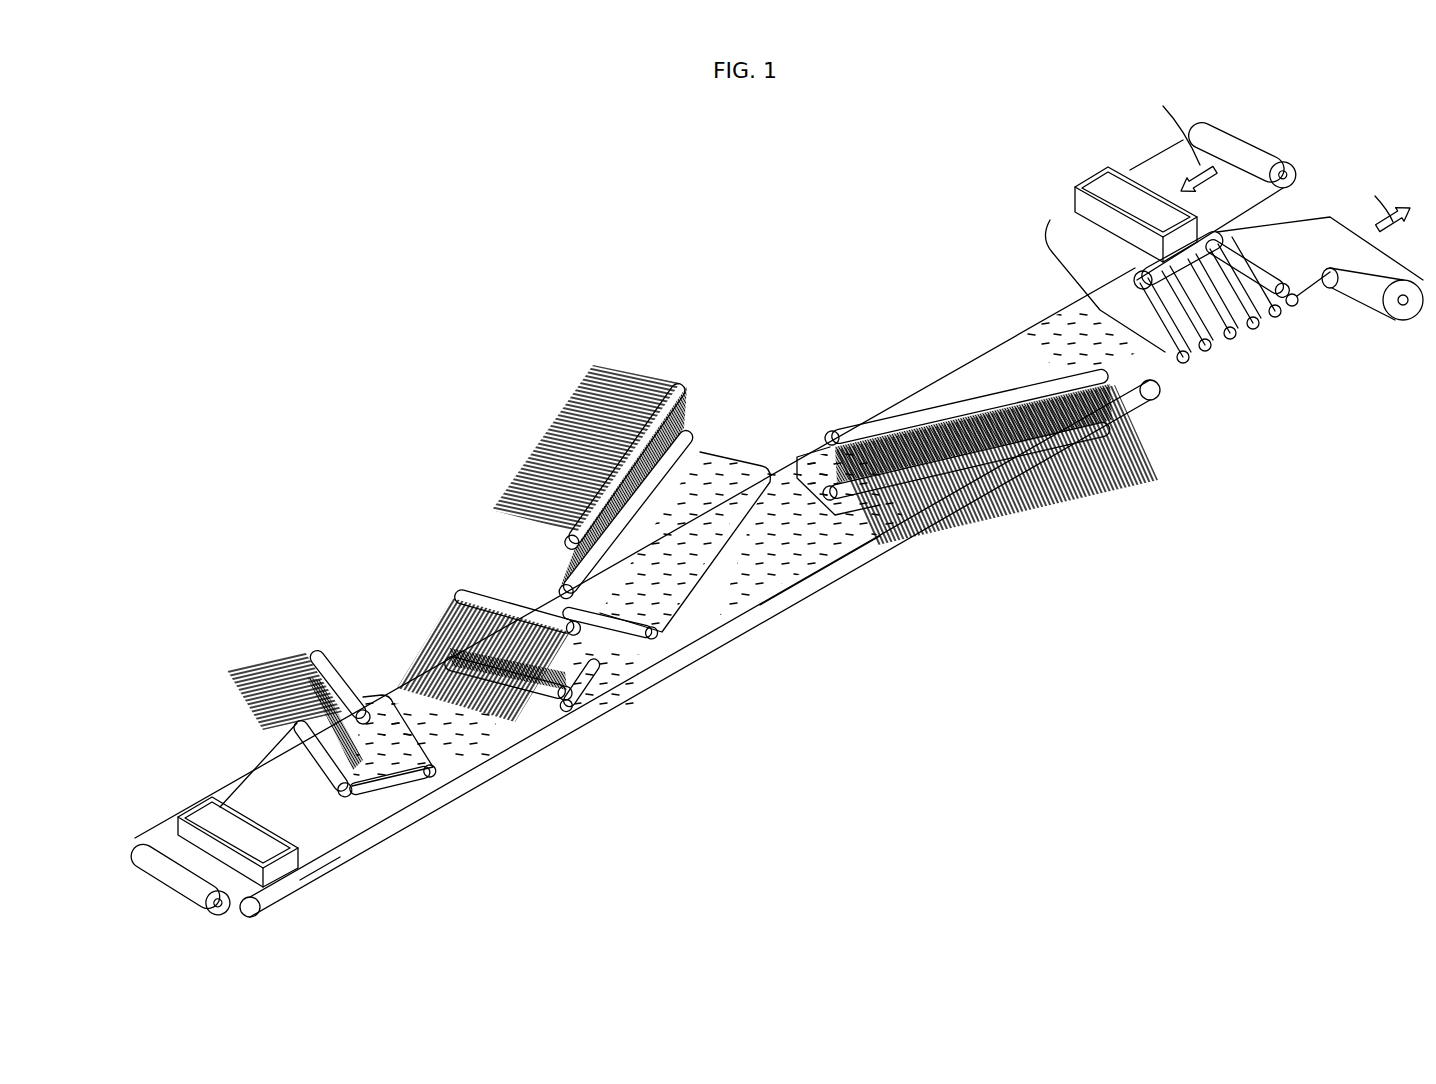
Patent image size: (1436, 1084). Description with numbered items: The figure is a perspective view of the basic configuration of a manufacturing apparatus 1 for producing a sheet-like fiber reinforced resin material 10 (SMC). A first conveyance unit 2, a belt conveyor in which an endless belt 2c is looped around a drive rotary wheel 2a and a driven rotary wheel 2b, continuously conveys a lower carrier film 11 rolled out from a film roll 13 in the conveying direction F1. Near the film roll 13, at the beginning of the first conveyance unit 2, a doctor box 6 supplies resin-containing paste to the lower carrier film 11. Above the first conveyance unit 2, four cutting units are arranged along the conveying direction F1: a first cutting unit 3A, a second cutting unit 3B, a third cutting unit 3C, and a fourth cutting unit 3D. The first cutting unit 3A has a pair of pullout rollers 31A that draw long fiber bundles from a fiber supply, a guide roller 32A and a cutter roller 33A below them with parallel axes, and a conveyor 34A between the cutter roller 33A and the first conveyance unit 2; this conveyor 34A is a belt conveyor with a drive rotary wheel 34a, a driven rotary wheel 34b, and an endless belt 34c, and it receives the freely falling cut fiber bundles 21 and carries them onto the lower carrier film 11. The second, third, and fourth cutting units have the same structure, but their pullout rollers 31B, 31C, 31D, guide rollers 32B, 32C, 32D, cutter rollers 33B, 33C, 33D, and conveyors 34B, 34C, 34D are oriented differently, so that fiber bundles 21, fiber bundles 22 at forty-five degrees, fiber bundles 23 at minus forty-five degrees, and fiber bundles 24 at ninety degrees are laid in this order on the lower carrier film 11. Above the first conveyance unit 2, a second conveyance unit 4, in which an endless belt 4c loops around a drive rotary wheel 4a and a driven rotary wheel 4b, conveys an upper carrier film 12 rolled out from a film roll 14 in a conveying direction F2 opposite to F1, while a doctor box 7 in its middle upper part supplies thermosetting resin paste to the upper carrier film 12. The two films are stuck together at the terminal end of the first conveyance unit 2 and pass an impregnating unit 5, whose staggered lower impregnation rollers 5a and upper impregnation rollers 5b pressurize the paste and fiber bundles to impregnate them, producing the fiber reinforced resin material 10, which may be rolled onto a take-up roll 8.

The manufacturing apparatus 1 is at (423, 303).
The first conveyance unit 2 is at (790, 625).
The drive rotary wheel 2a is at (1155, 398).
The driven rotary wheel 2b is at (262, 915).
The endless belt 2c is at (820, 602).
The first cutting unit 3A is at (352, 736).
The second cutting unit 3B is at (514, 672).
The third cutting unit 3C is at (631, 490).
The fourth cutting unit 3D is at (946, 468).
The second conveyance unit 4 is at (1235, 338).
The drive rotary wheel 4a is at (1183, 362).
The driven rotary wheel 4b is at (1258, 323).
The endless belt 4c is at (1210, 348).
The impregnating unit 5 is at (1245, 293).
The lower impregnation rollers 5a is at (1295, 303).
The upper impregnation rollers 5b is at (1265, 274).
The doctor box 6 is at (200, 812).
The doctor box 7 is at (1090, 188).
The take-up roll 8 is at (1405, 308).
The fiber reinforced resin material 10 is at (1326, 256).
The lower carrier film 11 is at (320, 835).
The upper carrier film 12 is at (1140, 165).
The film roll 13 is at (222, 905).
The film roll 14 is at (1262, 140).
The fiber bundles 21 is at (478, 742).
The fiber bundles 22 is at (638, 668).
The fiber bundles 23 is at (745, 590).
The fiber bundles 24 is at (985, 380).
The pullout rollers 31A is at (312, 648).
The guide roller 32A is at (305, 742).
The cutter roller 33A is at (372, 720).
The conveyor 34A is at (505, 862).
The drive rotary wheel 34a is at (440, 765).
The driven rotary wheel 34b is at (372, 792).
The endless belt 34c is at (405, 775).
The pullout roller 31B is at (452, 596).
The guide roller 32B is at (540, 692).
The cutter roller 33B is at (588, 688).
The conveyor 34B is at (590, 710).
The pullout roller 31C is at (684, 380).
The guide roller 32C is at (568, 592).
The cutter roller 33C is at (640, 612).
The conveyor 34C is at (700, 600).
The pullout roller 31D is at (846, 432).
The guide roller 32D is at (900, 495).
The cutter roller 33D is at (850, 520).
The conveyor 34D is at (800, 468).
The conveying direction F1 is at (1383, 201).
The conveying direction F2 is at (1178, 135).